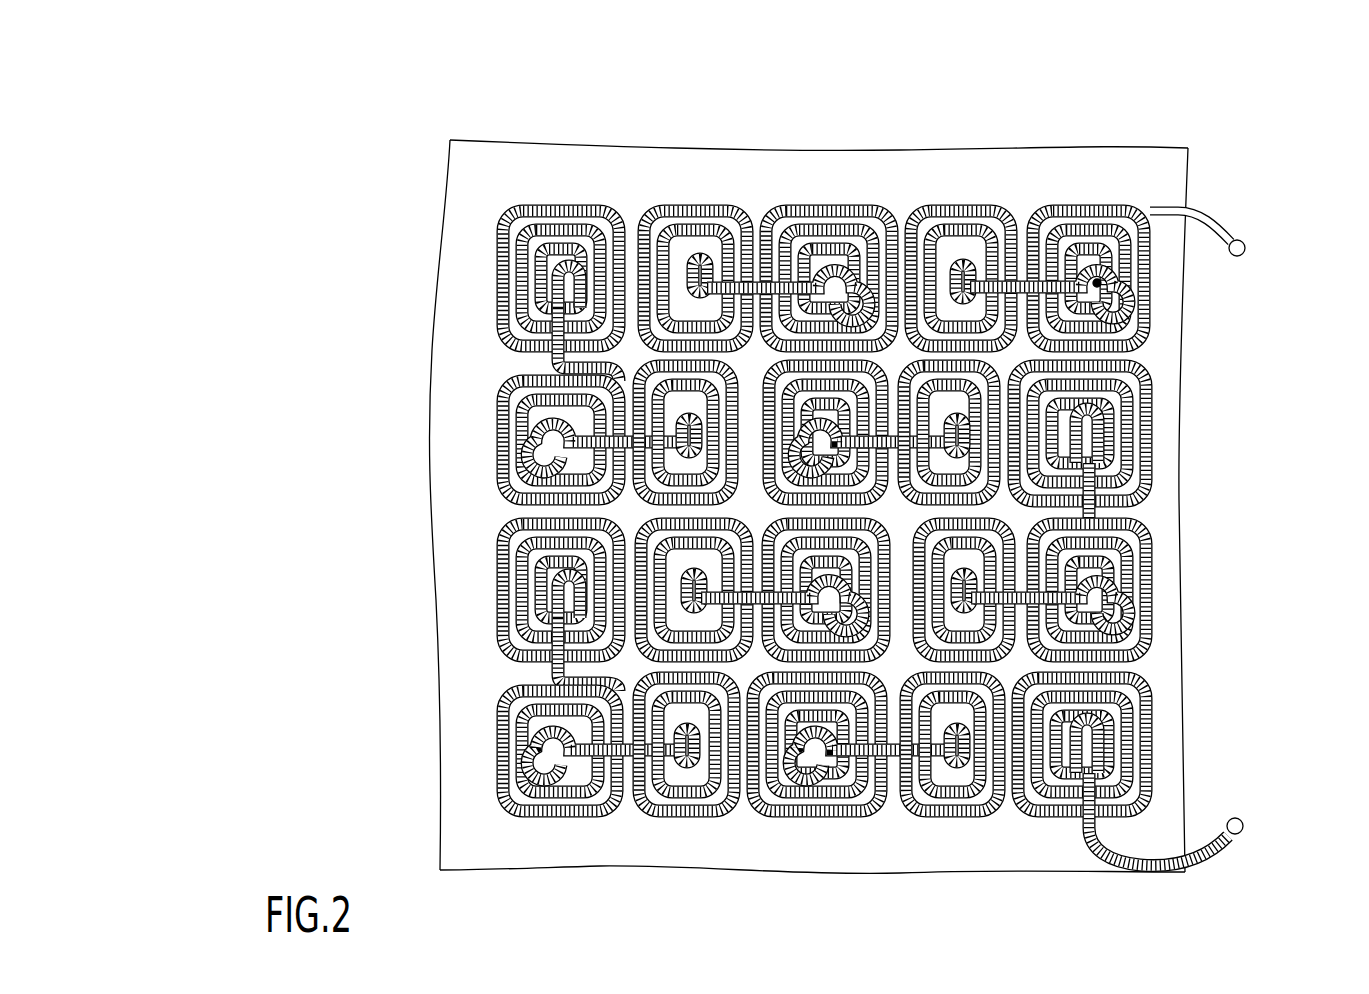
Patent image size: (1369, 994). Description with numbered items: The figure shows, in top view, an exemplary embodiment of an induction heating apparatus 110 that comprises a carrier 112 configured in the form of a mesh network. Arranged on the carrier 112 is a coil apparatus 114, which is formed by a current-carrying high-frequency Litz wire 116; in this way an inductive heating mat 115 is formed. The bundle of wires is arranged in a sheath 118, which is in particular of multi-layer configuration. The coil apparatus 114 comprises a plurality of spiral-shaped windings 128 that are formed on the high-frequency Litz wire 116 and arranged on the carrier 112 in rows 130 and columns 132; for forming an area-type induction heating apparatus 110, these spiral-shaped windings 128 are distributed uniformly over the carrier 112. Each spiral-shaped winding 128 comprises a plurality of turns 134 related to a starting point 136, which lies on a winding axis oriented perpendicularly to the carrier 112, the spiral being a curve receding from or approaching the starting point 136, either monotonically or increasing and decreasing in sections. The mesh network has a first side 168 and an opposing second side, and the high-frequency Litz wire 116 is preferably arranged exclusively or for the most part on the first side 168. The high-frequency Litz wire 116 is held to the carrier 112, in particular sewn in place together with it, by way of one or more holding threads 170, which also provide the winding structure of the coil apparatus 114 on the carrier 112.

The induction heating apparatus 110 is at (885, 128).
The carrier 112 is at (710, 487).
The coil apparatus 114 is at (824, 846).
The inductive heating mat 115 is at (398, 574).
The high-frequency Litz wire 116 is at (1097, 207).
The sheath 118 is at (1152, 720).
The spiral-shaped winding 128 is at (1150, 310).
The row 130 is at (470, 304).
The column 132 is at (814, 491).
The turn 134 is at (1135, 225).
The starting point 136 is at (1097, 283).
The first side 168 is at (693, 843).
The holding thread 170 is at (1152, 413).